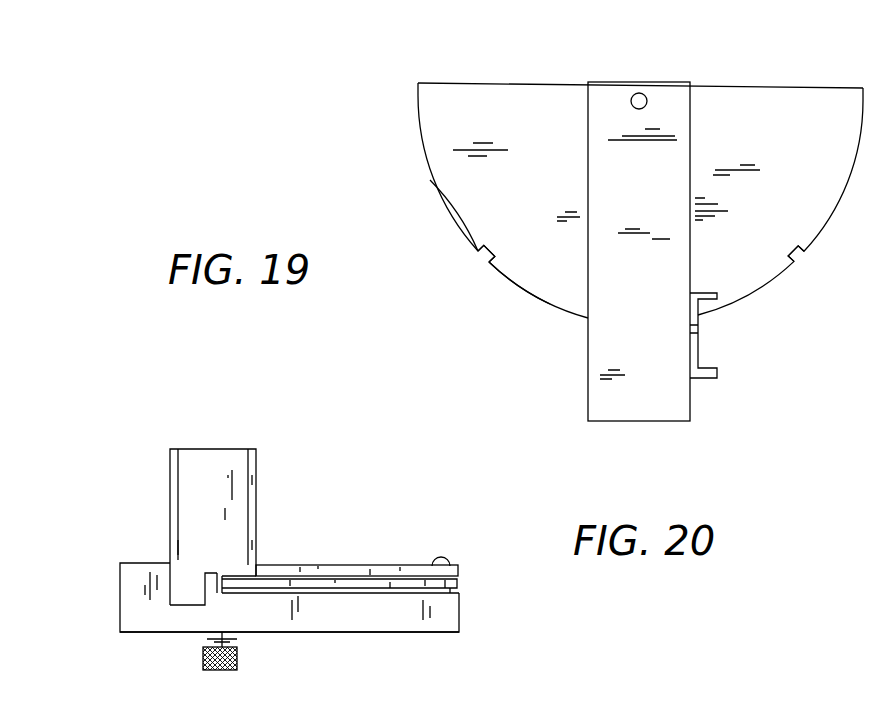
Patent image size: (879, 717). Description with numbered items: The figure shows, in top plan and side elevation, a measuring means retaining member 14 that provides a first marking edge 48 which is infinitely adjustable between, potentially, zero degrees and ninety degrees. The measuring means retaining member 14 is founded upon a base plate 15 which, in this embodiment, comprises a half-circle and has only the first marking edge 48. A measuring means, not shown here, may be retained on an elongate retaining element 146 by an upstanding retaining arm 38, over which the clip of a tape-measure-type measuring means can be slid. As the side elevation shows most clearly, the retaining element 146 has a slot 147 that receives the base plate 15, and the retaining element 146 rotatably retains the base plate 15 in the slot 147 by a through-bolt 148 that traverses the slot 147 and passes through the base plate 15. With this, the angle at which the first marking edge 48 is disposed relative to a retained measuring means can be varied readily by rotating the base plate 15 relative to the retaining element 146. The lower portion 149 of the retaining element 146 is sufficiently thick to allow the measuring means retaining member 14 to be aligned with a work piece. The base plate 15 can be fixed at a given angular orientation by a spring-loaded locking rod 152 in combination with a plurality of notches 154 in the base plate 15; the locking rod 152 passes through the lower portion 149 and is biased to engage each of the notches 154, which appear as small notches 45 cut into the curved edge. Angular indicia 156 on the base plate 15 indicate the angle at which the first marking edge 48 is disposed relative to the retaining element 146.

In FIG. 19, the measuring means retaining member 14 is at (400, 100).
In FIG. 20, the measuring means retaining member 14 is at (140, 535).
In FIG. 19, the base plate 15 is at (810, 151).
In FIG. 20, the base plate 15 is at (363, 577).
In FIG. 19, the retaining arm 38 is at (698, 335).
In FIG. 20, the retaining arm 38 is at (212, 449).
In FIG. 19, the notch 45 is at (641, 242).
In FIG. 19, the first marking edge 48 is at (845, 86).
In FIG. 20, the first marking edge 48 is at (480, 542).
In FIG. 19, the retaining element 146 is at (660, 193).
In FIG. 20, the retaining element 146 is at (120, 593).
In FIG. 20, the slot 147 is at (300, 594).
In FIG. 19, the through-bolt 148 is at (632, 94).
In FIG. 20, the through-bolt 148 is at (432, 566).
In FIG. 20, the lower portion 149 is at (443, 635).
In FIG. 20, the locking rod 152 is at (202, 658).
In FIG. 19, the notches 154 is at (479, 256).
In FIG. 19, the angular indicia 156 is at (510, 248).